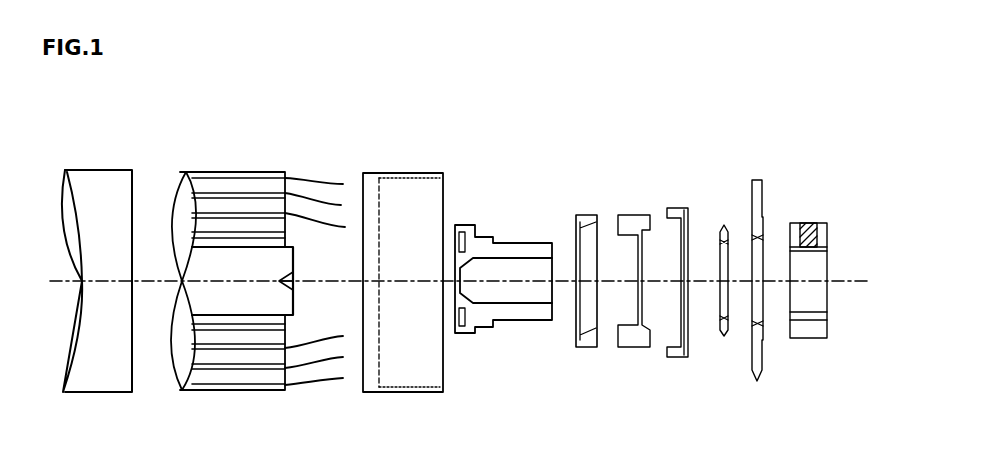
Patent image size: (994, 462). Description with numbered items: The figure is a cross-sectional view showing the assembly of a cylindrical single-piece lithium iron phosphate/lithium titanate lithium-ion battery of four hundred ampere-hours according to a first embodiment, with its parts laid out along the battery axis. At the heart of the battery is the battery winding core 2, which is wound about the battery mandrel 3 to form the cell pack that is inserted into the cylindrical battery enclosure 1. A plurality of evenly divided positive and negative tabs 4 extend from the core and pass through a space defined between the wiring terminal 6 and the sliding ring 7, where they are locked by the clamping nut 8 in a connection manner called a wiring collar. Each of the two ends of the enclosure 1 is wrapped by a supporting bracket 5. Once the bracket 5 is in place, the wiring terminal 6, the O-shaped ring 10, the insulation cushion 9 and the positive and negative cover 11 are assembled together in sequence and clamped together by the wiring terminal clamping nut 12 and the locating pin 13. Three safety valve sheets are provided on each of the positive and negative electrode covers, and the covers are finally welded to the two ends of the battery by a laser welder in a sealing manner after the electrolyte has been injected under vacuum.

The cylindrical battery enclosure 1 is at (95, 195).
The battery winding core 2 is at (197, 190).
The battery mandrel 3 is at (257, 267).
The tab 4 is at (317, 180).
The supporting bracket 5 is at (420, 183).
The wiring terminal 6 is at (507, 248).
The sliding ring 7 is at (588, 217).
The clamping nut 8 is at (635, 218).
The insulation cushion 9 is at (675, 208).
The O-shaped ring 10 is at (723, 228).
The positive and negative cover 11 is at (755, 182).
The wiring terminal clamping nut 12 is at (795, 227).
The locating pin 13 is at (808, 236).